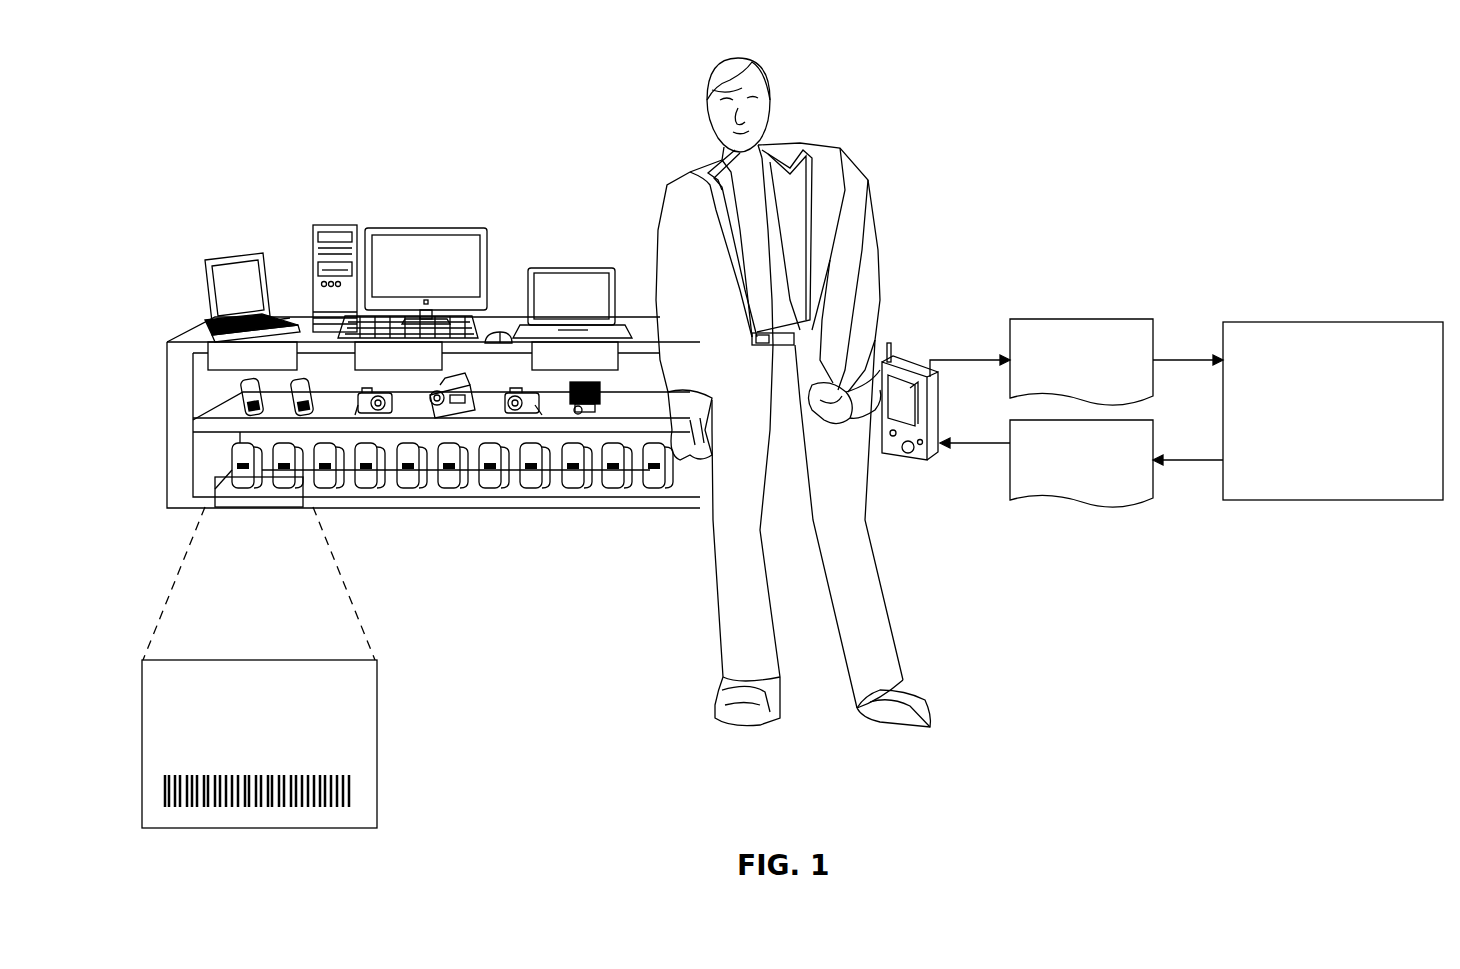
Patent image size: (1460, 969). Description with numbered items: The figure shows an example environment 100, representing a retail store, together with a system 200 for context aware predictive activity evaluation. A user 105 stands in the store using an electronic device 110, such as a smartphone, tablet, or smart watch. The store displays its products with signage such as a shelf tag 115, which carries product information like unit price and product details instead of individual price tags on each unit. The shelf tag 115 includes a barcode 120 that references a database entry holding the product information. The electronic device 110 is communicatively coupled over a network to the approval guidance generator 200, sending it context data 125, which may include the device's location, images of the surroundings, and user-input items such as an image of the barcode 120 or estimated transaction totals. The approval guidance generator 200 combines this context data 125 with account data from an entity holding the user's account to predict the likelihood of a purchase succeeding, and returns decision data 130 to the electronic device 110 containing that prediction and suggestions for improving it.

The environment 100 is at (1358, 114).
The user 105 is at (712, 78).
The electronic device 110 is at (912, 358).
The shelf tag 115 is at (213, 493).
The barcode 120 is at (163, 792).
The context data 125 is at (1094, 316).
The decision data 130 is at (1105, 508).
The approval guidance generator 200 is at (1385, 318).